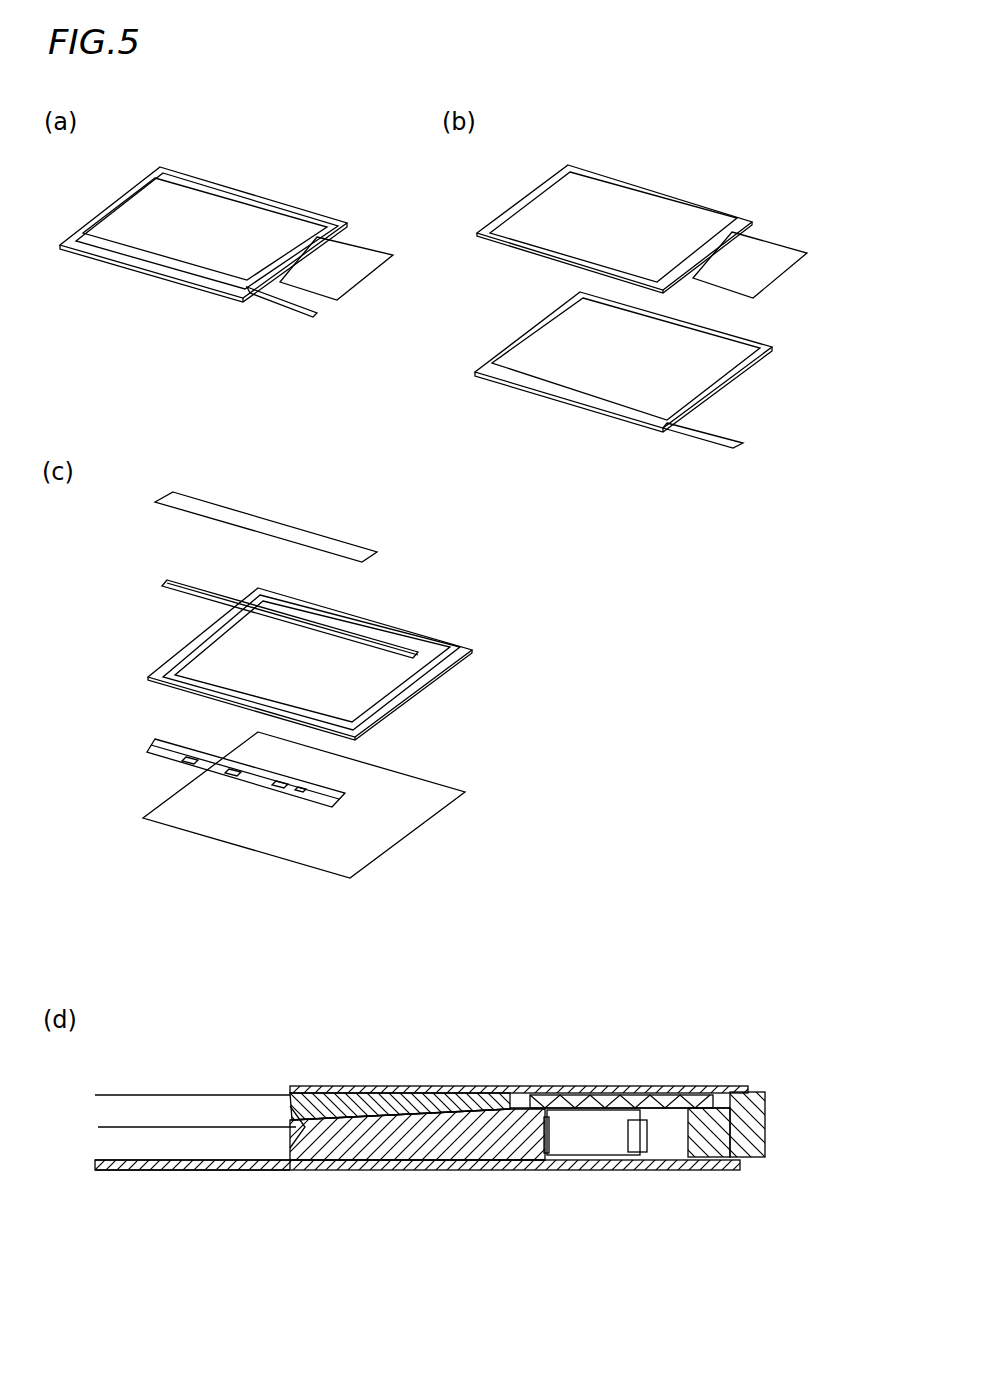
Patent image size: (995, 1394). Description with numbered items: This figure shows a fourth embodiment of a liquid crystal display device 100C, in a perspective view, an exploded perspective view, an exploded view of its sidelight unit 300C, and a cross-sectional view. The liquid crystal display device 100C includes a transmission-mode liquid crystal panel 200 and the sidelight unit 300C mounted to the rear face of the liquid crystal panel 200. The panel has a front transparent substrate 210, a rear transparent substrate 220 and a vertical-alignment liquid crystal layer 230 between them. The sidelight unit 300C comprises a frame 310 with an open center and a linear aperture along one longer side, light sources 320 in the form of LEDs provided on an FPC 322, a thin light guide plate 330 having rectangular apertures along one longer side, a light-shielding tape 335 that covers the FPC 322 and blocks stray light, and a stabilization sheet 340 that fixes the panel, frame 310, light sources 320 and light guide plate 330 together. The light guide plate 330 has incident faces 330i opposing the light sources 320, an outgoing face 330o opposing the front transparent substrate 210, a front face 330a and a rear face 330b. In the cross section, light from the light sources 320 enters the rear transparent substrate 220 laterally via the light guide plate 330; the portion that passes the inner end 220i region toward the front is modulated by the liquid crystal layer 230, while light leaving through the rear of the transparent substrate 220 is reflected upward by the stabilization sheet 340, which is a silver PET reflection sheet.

The liquid crystal display device 100C is at (320, 158).
The liquid crystal panel 200 is at (640, 198).
The sidelight unit 300C is at (592, 385).
The light-shielding tape 335 is at (268, 523).
The FPC 322 is at (160, 583).
The light sources 320 is at (205, 600).
The frame 310 is at (152, 673).
The light guide plate 330 is at (147, 750).
The front face 330a is at (408, 1110).
The outgoing face 330o is at (297, 1130).
The rear face 330b is at (387, 1170).
The incident face 330i is at (535, 1140).
The stabilization sheet 340 is at (168, 820).
The front transparent substrate 210 is at (172, 1115).
The liquid crystal layer 230 is at (98, 1127).
The rear transparent substrate 220 is at (177, 1143).
The inner end of lower substrate 220i is at (290, 1133).